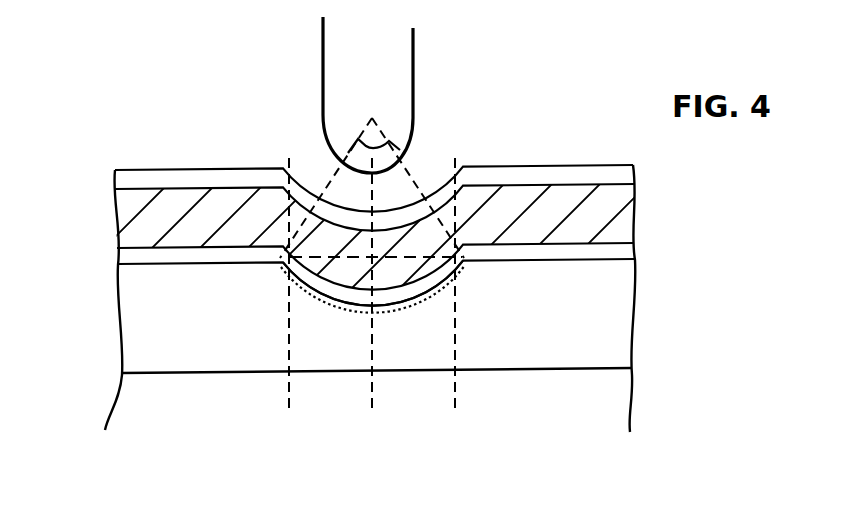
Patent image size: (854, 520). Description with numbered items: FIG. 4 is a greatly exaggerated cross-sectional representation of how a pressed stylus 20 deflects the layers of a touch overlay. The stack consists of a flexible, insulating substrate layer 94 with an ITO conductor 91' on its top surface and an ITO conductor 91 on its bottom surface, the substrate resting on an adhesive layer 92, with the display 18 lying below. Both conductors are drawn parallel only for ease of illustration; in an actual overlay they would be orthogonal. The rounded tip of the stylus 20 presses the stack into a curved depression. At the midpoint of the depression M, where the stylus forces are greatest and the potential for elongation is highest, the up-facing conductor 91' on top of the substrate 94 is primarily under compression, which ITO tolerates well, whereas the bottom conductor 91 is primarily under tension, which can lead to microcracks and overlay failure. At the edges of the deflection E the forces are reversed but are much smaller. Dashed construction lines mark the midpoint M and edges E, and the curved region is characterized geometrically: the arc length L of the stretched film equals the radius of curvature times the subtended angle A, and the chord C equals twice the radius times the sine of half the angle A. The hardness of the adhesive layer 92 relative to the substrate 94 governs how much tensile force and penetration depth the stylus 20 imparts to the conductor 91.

The stylus 20 is at (415, 70).
The ITO conductor 91' is at (342, 188).
The substrate layer 94 is at (623, 221).
The ITO conductor 91 is at (343, 274).
The adhesive layer 92 is at (607, 305).
The display 18 is at (607, 404).
The angle subtended by the arc A is at (363, 136).
The chord of the arc C is at (313, 287).
The arc length L is at (337, 308).
The edges of the deflection E is at (371, 306).
The midpoint of the depression M is at (373, 306).